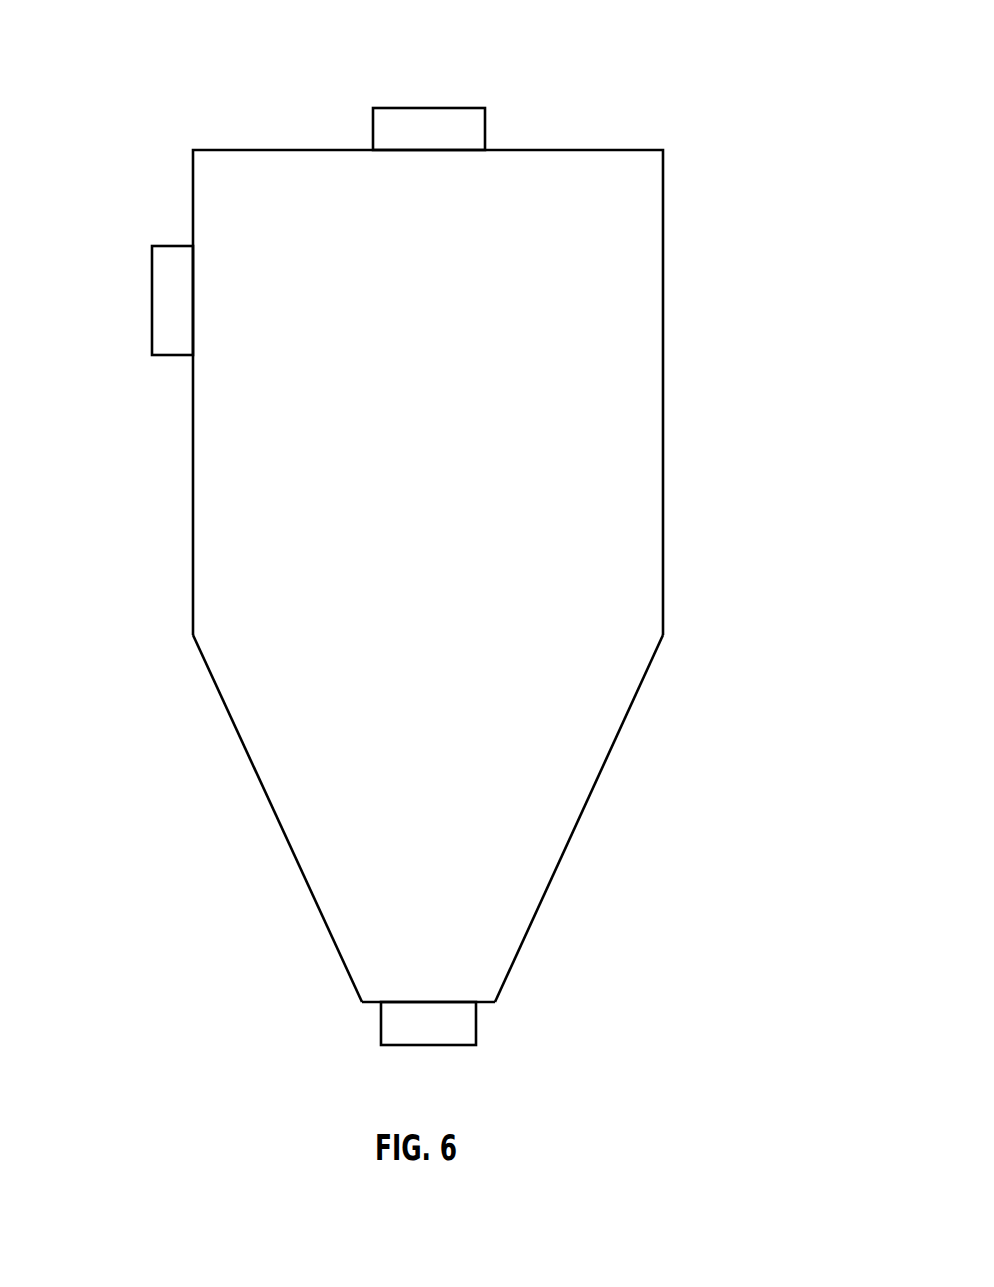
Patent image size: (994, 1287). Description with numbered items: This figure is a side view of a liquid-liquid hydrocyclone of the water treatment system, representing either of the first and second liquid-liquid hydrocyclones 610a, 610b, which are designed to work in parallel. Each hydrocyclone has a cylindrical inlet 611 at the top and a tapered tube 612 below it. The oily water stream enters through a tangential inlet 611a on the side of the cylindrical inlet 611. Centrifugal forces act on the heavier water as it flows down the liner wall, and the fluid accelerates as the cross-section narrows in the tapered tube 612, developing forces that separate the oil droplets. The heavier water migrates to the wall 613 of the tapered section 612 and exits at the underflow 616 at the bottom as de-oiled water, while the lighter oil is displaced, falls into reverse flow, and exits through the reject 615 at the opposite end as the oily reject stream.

The first liquid-liquid hydrocyclone 610a is at (434, 538).
The second liquid-liquid hydrocyclone 610b is at (434, 538).
The cylindrical inlet 611 is at (665, 166).
The tangential inlet 611a is at (150, 262).
The tapered tube 612 is at (345, 967).
The wall 613 is at (528, 940).
The reject 615 is at (422, 106).
The underflow 616 is at (477, 1027).